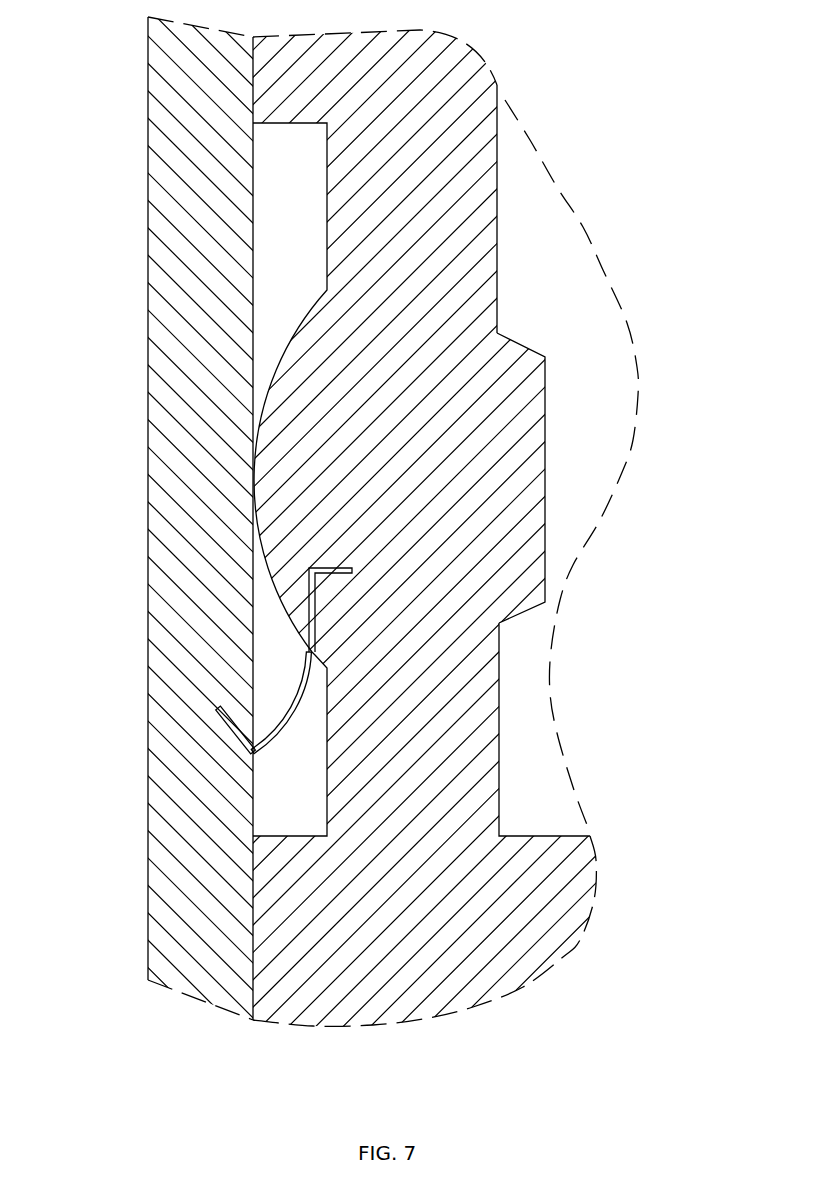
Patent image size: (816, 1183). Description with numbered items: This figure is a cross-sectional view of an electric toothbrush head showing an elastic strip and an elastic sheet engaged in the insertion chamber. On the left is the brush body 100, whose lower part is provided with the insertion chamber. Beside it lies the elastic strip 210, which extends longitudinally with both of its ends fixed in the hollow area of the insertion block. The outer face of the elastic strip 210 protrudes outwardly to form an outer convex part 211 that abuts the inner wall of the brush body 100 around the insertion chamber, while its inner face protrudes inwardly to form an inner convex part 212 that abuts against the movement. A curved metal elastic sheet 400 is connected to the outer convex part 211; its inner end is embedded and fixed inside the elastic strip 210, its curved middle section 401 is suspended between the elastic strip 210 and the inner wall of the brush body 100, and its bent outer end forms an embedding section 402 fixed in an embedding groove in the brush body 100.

The brush body 100 is at (190, 417).
The elastic strip 210 is at (442, 258).
The outer convex part 211 is at (307, 377).
The inner convex part 212 is at (518, 443).
The elastic sheet 400 is at (350, 677).
The middle section 401 is at (312, 682).
The embedding section 402 is at (232, 722).